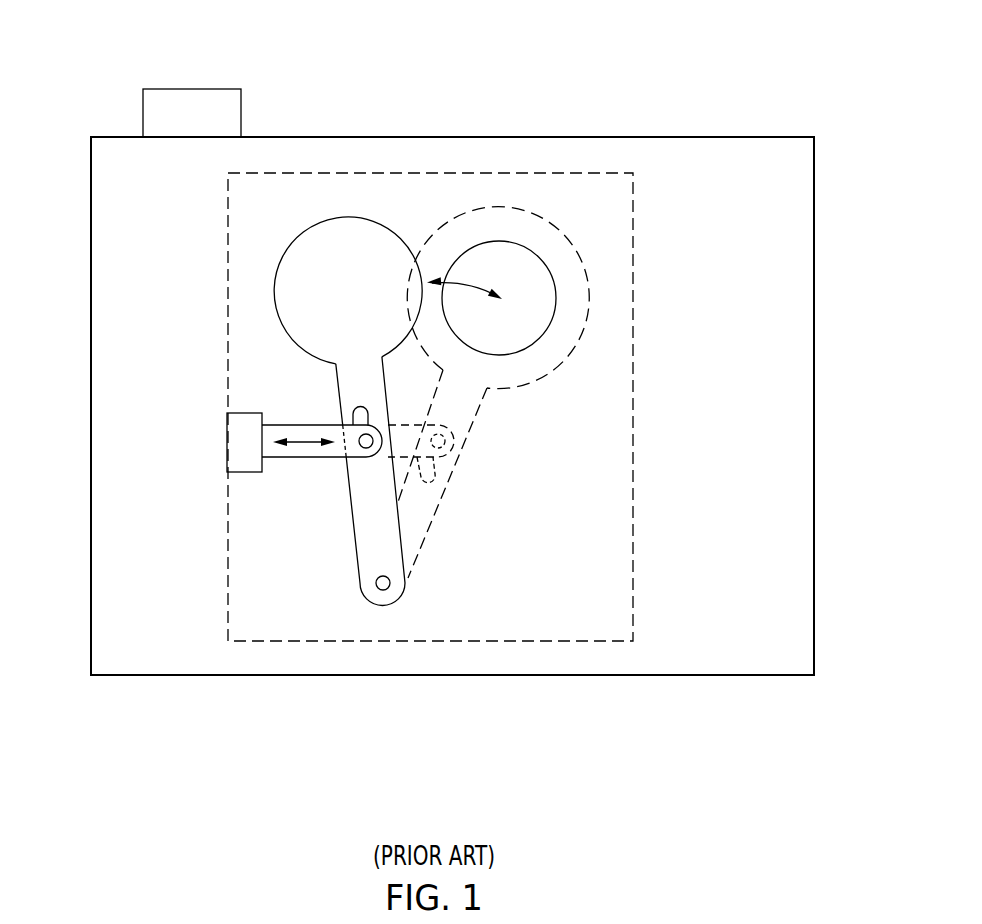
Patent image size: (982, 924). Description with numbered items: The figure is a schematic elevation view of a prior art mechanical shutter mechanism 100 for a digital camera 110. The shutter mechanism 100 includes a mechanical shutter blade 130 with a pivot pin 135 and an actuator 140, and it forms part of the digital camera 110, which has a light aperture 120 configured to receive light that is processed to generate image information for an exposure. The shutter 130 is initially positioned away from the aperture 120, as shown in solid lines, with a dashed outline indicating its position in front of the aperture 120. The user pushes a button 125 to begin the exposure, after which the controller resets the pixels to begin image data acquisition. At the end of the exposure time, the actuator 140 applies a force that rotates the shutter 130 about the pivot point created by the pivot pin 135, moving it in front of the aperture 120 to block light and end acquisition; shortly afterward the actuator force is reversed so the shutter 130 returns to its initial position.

The mechanical shutter mechanism 100 is at (455, 160).
The digital camera 110 is at (815, 198).
The light aperture 120 is at (528, 262).
The button 125 is at (221, 89).
The mechanical shutter blade 130 is at (364, 533).
The pivot pin 135 is at (387, 586).
The actuator 140 is at (235, 428).